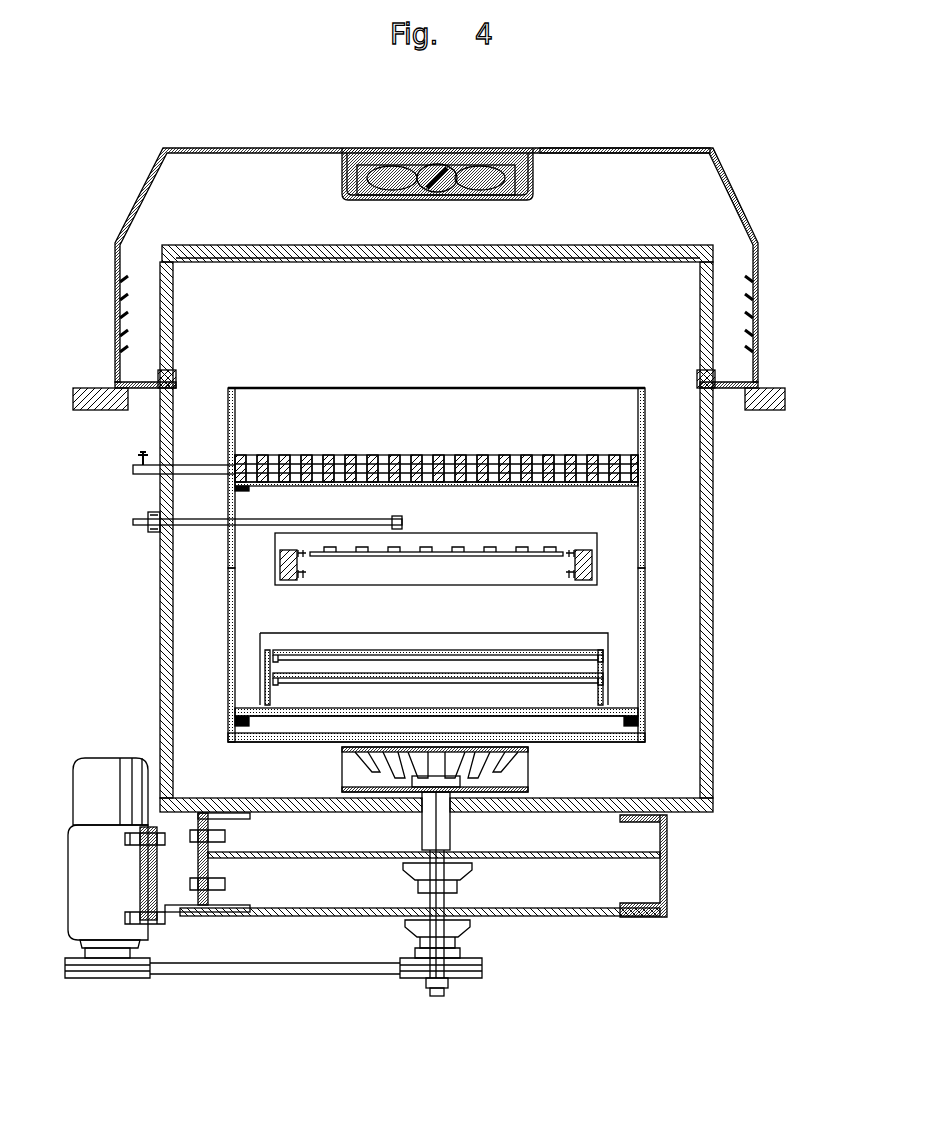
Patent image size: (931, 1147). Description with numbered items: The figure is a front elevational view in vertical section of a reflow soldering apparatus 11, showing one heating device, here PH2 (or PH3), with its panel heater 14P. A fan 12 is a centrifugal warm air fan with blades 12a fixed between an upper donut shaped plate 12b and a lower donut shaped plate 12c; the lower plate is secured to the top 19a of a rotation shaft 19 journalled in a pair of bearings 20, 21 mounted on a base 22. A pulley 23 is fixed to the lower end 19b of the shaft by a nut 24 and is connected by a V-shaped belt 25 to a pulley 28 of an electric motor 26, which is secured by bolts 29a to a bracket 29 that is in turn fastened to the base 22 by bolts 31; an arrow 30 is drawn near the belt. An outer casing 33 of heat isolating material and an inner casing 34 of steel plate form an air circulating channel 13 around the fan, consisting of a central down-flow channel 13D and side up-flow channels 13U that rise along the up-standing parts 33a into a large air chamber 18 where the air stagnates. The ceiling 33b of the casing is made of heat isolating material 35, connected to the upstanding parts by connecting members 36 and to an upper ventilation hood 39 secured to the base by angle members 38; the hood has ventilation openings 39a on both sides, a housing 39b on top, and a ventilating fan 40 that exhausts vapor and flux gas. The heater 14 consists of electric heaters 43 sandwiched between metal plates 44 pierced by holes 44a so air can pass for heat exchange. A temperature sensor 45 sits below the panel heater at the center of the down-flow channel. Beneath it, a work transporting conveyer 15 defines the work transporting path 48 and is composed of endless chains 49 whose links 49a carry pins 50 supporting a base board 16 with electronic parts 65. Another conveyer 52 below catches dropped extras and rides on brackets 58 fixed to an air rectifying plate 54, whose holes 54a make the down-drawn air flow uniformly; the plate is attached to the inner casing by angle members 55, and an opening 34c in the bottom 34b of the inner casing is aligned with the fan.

The reflow soldering apparatus 11 is at (662, 140).
The fan 12 is at (531, 767).
The blades 12a is at (342, 773).
The upper donut shaped plate 12b is at (342, 749).
The lower donut shaped plate 12c is at (342, 790).
The air circulating channel 13 is at (200, 587).
The channel 13D is at (620, 523).
The channels 13U is at (197, 631).
The heater 14 is at (512, 452).
The panel heater 14P is at (558, 452).
The work transporting conveyer 15 is at (560, 556).
The base board 16 is at (510, 551).
The air chamber 18 is at (560, 285).
The rotation shaft 19 is at (453, 827).
The top of rotation shaft 19a is at (470, 781).
The lower end of rotation shaft 19b is at (441, 996).
The bearing 20 is at (473, 873).
The bearing 21 is at (470, 935).
The base 22 is at (85, 411).
The pulley 23 is at (470, 976).
The nut 24 is at (428, 984).
The V-shaped belt 25 is at (200, 976).
The electric motor 26 is at (103, 757).
The pulley 28 is at (152, 977).
The bracket 29 is at (185, 912).
The bolts 29a is at (165, 842).
The rotation direction 30 is at (266, 985).
The bolts 31 is at (226, 838).
The outer casing 33 is at (716, 710).
The up-standing parts 33a is at (160, 676).
The ceiling 33b is at (283, 244).
The inner casing 34 is at (644, 425).
The bottom 34b is at (592, 743).
The opening 34c is at (503, 742).
The heat isolating material 35 is at (440, 245).
The connecting members 36 is at (178, 382).
The angle members 38 is at (100, 386).
The upper ventilation hood 39 is at (289, 147).
The ventilation openings 39a is at (119, 295).
The fan housing 39b is at (481, 147).
The ventilating fan 40 is at (480, 180).
The electric heaters 43 is at (412, 462).
The metal plates 44 is at (353, 457).
The holes 44a is at (298, 458).
The temperature sensor 45 is at (402, 519).
The work transporting path 48 is at (580, 540).
The endless chains 49 is at (306, 577).
The links 49a is at (297, 581).
The pin 50 is at (304, 574).
The conveyer 52 is at (325, 673).
The air rectifying plate 54 is at (446, 708).
The holes 54a is at (345, 708).
The angle members 55 is at (248, 724).
The brackets 58 is at (265, 698).
The electronic parts 65 is at (465, 547).
The heating device PH2 is at (625, 122).
The heating device PH3 is at (583, 147).